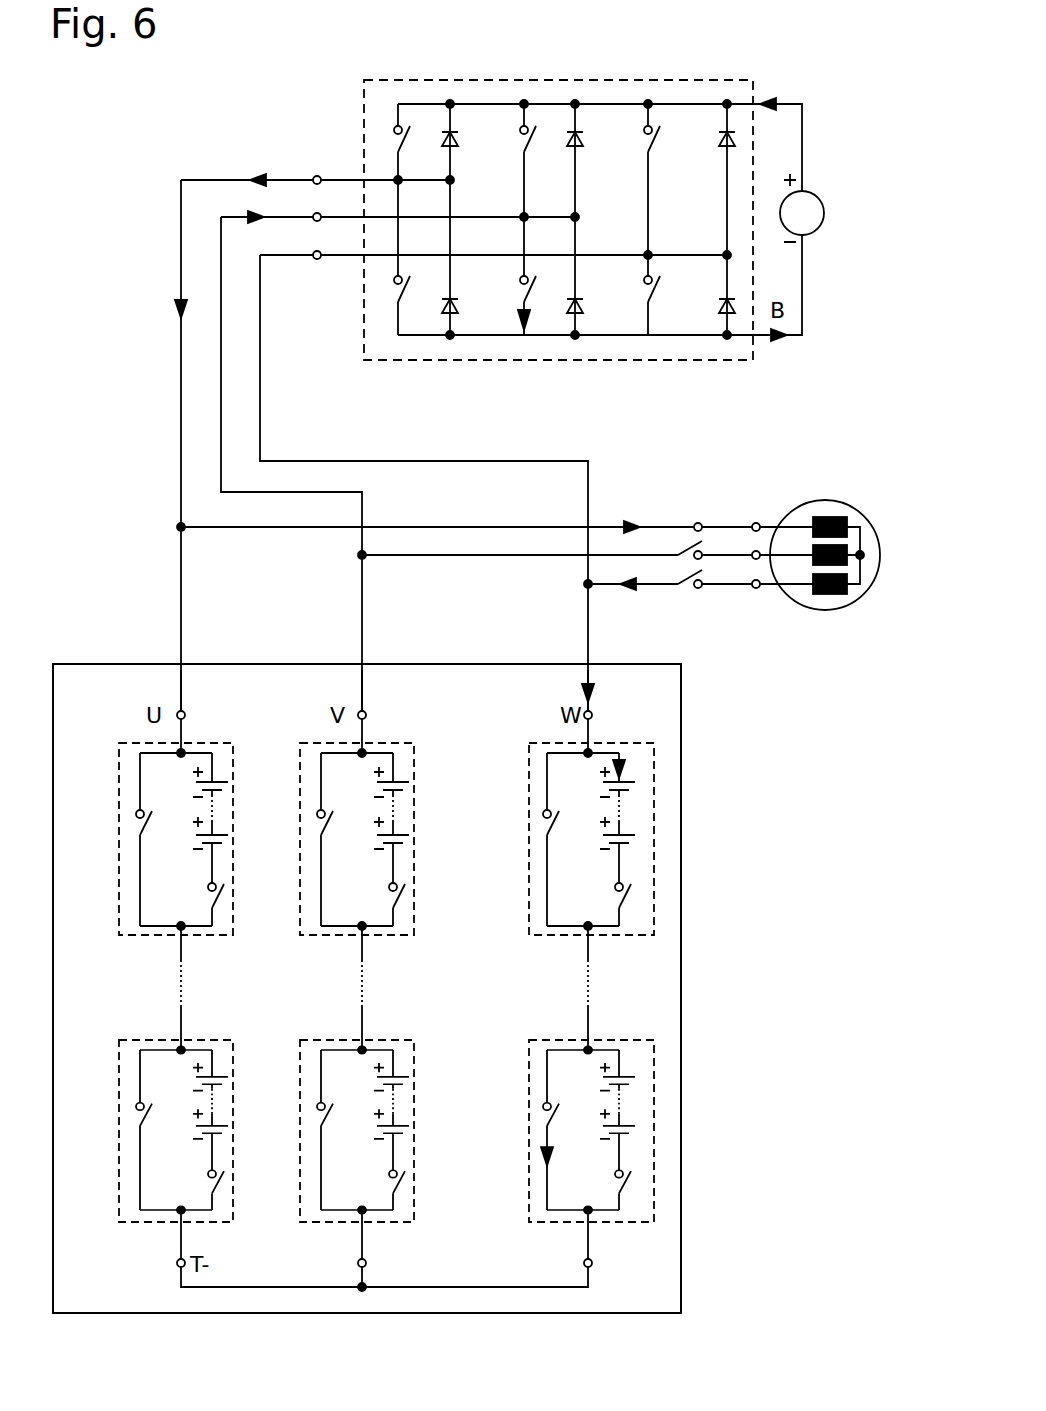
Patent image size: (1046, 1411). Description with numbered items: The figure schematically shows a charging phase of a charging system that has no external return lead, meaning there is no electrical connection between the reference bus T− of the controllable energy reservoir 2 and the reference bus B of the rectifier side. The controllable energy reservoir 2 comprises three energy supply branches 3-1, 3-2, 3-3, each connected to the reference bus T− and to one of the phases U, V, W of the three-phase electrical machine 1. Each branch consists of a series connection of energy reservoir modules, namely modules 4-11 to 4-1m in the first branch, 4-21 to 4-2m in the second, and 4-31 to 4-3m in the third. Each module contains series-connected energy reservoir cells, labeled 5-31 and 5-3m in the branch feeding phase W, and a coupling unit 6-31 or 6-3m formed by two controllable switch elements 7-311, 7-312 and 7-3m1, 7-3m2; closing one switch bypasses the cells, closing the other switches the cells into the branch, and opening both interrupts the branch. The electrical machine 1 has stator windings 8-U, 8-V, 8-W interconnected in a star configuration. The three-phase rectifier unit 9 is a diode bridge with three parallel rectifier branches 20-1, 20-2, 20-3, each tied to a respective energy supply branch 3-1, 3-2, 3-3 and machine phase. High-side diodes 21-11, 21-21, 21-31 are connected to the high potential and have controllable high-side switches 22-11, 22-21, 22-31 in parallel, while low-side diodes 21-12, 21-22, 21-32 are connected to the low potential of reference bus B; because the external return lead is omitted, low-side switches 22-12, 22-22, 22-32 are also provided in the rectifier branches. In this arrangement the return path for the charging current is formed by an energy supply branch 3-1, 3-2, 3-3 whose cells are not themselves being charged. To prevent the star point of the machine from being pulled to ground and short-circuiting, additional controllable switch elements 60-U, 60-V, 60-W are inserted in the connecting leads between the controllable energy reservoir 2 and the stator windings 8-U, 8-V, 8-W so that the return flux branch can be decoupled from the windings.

The three-phase electrical machine 1 is at (818, 556).
The controllable energy reservoir 2 is at (88, 681).
The three-phase rectifier unit 9 is at (367, 80).
The energy supply branch 3-1 is at (183, 688).
The energy supply branch 3-2 is at (364, 688).
The energy supply branch 3-3 is at (586, 688).
The energy reservoir module 4-11 is at (125, 760).
The energy reservoir module 4-21 is at (308, 760).
The energy reservoir module 4-31 is at (612, 822).
The energy reservoir module 4-1m is at (125, 1056).
The energy reservoir module 4-2m is at (308, 1056).
The energy reservoir module 4-3m is at (611, 1114).
The energy reservoir cells 5-31 is at (686, 818).
The energy reservoir cells 5-3m is at (690, 1110).
The coupling unit 6-31 is at (535, 926).
The coupling unit 6-3m is at (527, 1214).
The controllable switch element 7-311 is at (498, 839).
The controllable switch element 7-312 is at (701, 904).
The controllable switch element 7-3m1 is at (493, 1130).
The controllable switch element 7-3m2 is at (704, 1190).
The stator winding 8-U is at (830, 517).
The stator winding 8-V is at (815, 555).
The stator winding 8-W is at (830, 594).
The rectifier branch 20-1 is at (462, 148).
The rectifier branch 20-2 is at (587, 152).
The rectifier branch 20-3 is at (708, 152).
The high-side diode 21-11 is at (440, 134).
The high-side diode 21-21 is at (565, 134).
The high-side diode 21-31 is at (717, 134).
The low-side diode 21-12 is at (440, 310).
The low-side diode 21-22 is at (565, 310).
The low-side diode 21-32 is at (717, 310).
The high-side switch 22-11 is at (398, 132).
The high-side switch 22-21 is at (520, 128).
The high-side switch 22-31 is at (644, 128).
The low-side switch 22-12 is at (398, 282).
The low-side switch 22-22 is at (520, 292).
The low-side switch 22-32 is at (645, 292).
The additional controllable switch element 60-U is at (698, 521).
The additional controllable switch element 60-V is at (690, 548).
The additional controllable switch element 60-W is at (698, 590).